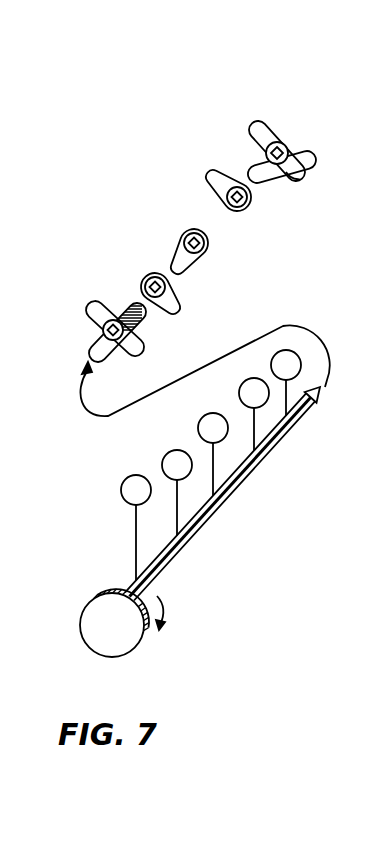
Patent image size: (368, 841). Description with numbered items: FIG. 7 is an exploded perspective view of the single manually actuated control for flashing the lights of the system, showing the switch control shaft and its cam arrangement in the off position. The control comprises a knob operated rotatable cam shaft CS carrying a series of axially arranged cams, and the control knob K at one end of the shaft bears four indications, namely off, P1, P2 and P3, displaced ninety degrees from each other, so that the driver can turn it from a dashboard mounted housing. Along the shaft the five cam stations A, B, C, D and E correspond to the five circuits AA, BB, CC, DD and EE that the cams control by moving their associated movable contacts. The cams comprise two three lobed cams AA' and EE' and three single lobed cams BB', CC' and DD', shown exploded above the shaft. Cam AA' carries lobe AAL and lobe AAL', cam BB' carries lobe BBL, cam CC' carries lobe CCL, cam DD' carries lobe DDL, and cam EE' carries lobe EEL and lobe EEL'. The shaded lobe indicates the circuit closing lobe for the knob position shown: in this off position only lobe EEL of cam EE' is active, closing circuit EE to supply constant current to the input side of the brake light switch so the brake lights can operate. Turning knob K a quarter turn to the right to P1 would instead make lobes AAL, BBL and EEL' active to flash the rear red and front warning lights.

The three lobed cam AA' is at (291, 128).
The lobe of cam AA' AAL is at (250, 150).
The lobe of cam AA' AAL' is at (321, 184).
The single lobed cam BB' is at (269, 203).
The lobe of cam BB' BBL is at (216, 183).
The single lobed cam CC' is at (183, 228).
The lobe of cam CC' CCL is at (186, 268).
The single lobed cam DD' is at (136, 275).
The lobe of cam DD' DDL is at (176, 301).
The three lobed cam EE' is at (115, 306).
The lobe of cam EE' EEL is at (150, 331).
The lobe of cam EE' EEL' is at (90, 321).
The cam position for circuit AA A is at (286, 383).
The cam position for circuit BB B is at (254, 414).
The cam position for circuit CC C is at (213, 454).
The cam position for circuit DD D is at (177, 492).
The cam position for circuit EE E is at (136, 527).
The cam shaft CS is at (208, 518).
The control knob K is at (149, 628).